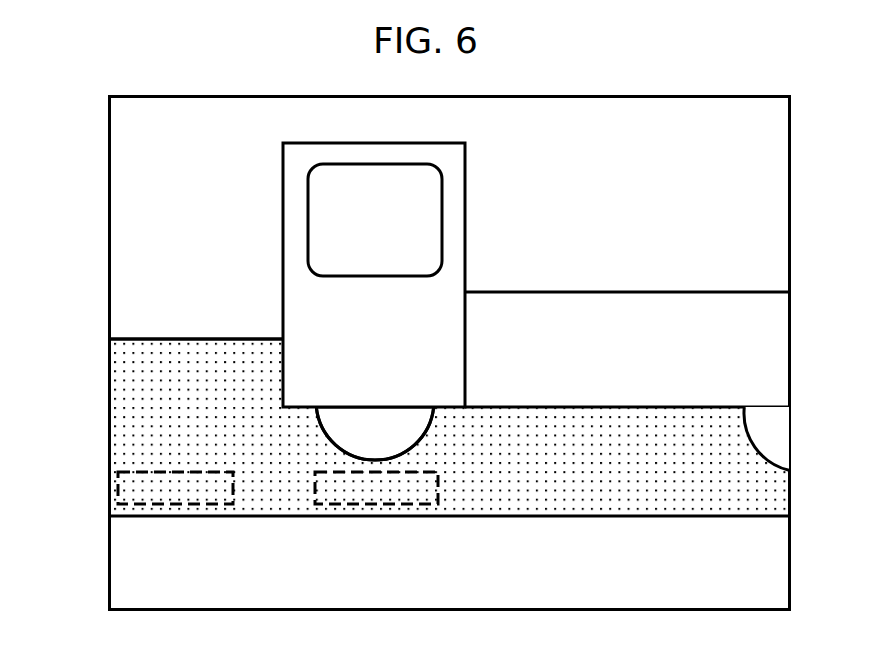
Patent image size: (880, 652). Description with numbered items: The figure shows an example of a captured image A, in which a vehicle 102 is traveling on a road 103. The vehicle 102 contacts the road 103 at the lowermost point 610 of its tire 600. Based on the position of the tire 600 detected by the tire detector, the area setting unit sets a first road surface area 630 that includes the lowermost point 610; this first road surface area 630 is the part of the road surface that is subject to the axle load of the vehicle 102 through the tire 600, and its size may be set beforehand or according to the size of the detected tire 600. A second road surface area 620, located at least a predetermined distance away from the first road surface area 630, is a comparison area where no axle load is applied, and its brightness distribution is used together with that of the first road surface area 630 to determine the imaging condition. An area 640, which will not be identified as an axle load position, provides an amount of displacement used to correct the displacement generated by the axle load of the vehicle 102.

The captured image A is at (717, 96).
The vehicle 102 is at (617, 292).
The road 103 is at (160, 339).
The tire 600 is at (432, 430).
The lowermost point 610 is at (378, 472).
The second road surface area 620 is at (193, 505).
The first road surface area 630 is at (337, 505).
The area 640 is at (123, 403).